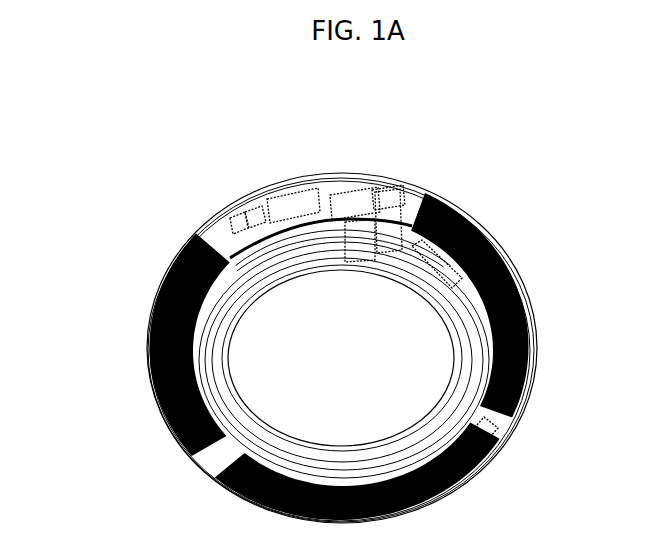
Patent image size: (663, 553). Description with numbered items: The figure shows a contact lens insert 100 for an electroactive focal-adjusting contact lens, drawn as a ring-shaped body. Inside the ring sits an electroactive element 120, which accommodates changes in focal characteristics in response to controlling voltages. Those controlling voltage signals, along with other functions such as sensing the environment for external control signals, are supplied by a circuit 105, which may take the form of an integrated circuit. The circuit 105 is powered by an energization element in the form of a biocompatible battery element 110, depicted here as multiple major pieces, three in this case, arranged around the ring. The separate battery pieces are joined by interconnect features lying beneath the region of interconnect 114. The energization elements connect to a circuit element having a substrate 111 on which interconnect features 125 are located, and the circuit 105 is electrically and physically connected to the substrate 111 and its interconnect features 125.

The contact lens insert 100 is at (70, 281).
The circuit 105 is at (293, 182).
The biocompatible battery element 110 is at (512, 262).
The substrate 111 is at (400, 193).
The region of interconnect 114 is at (519, 413).
The electroactive element 120 is at (324, 380).
The interconnect features 125 is at (222, 226).